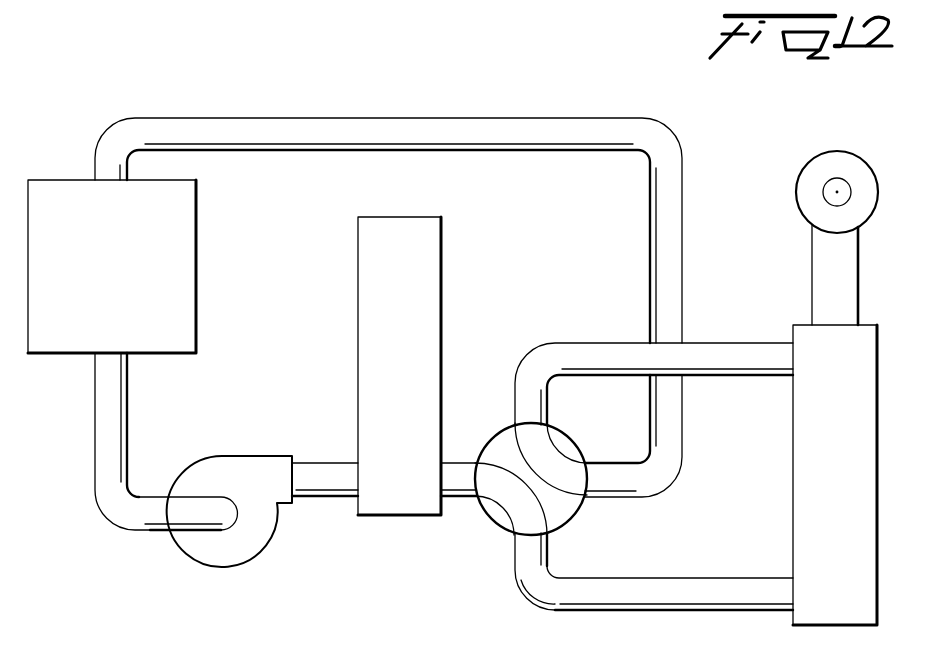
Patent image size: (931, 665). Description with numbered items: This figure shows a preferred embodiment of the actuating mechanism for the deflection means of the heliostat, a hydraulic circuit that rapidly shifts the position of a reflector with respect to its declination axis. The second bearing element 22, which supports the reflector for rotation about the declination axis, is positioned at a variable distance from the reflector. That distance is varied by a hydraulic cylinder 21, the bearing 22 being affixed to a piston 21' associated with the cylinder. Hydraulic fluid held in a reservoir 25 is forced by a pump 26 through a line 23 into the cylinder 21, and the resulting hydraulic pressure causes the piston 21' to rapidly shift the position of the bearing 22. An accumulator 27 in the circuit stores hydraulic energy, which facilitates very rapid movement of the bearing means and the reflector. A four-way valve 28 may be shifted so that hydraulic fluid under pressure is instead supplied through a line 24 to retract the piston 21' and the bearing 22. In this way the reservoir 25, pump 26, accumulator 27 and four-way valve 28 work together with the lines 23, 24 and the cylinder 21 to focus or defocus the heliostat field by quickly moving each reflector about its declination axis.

The hydraulic cylinder 21 is at (797, 475).
The piston 21' is at (790, 275).
The bearing element 22 is at (810, 182).
The line 23 is at (587, 585).
The line 24 is at (683, 350).
The reservoir 25 is at (180, 278).
The pump 26 is at (210, 552).
The accumulator 27 is at (423, 283).
The four-way valve 28 is at (493, 512).